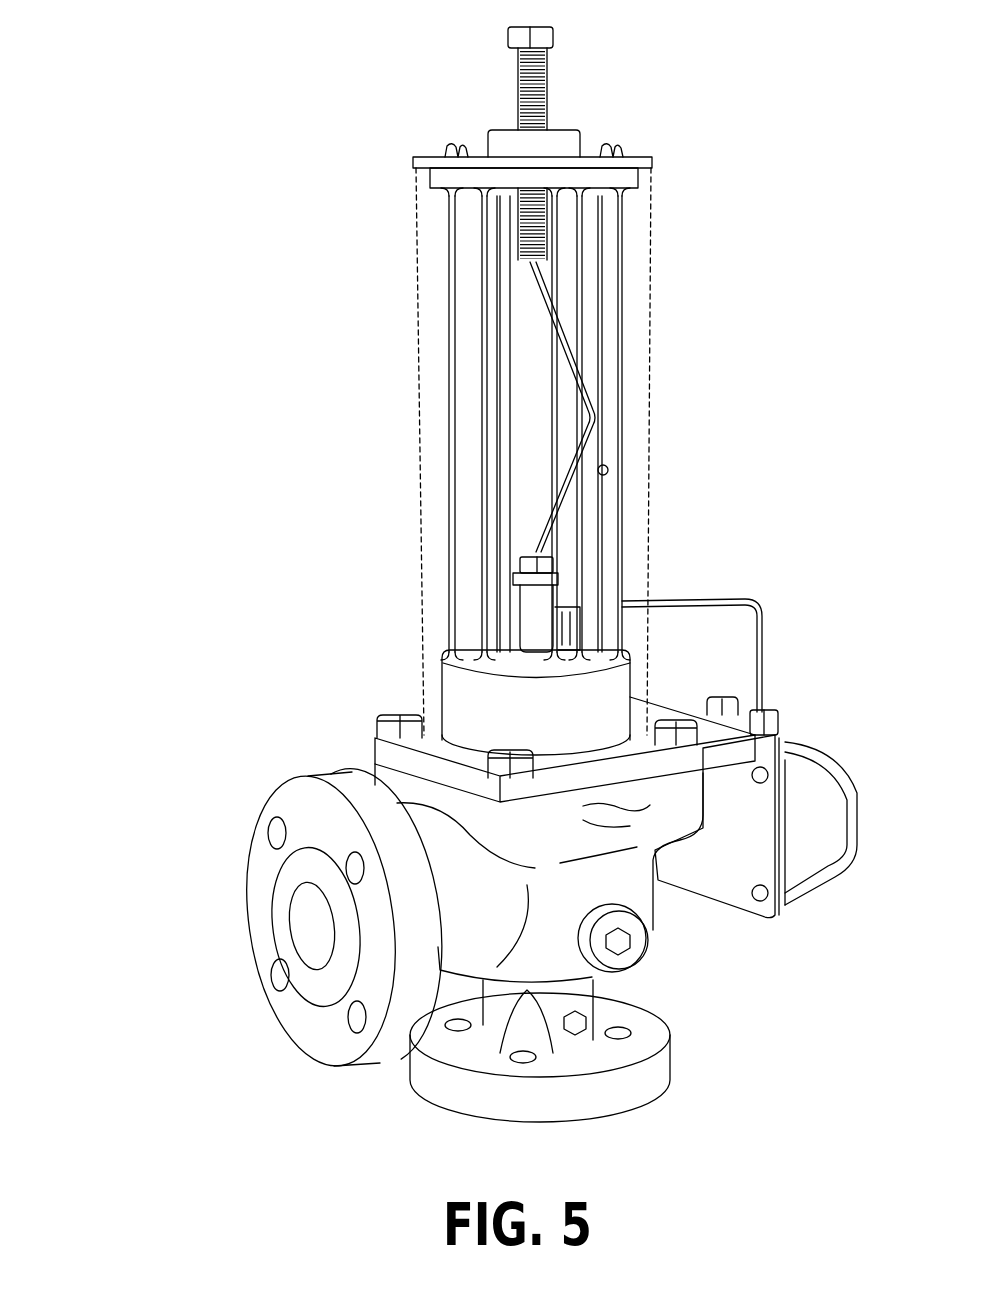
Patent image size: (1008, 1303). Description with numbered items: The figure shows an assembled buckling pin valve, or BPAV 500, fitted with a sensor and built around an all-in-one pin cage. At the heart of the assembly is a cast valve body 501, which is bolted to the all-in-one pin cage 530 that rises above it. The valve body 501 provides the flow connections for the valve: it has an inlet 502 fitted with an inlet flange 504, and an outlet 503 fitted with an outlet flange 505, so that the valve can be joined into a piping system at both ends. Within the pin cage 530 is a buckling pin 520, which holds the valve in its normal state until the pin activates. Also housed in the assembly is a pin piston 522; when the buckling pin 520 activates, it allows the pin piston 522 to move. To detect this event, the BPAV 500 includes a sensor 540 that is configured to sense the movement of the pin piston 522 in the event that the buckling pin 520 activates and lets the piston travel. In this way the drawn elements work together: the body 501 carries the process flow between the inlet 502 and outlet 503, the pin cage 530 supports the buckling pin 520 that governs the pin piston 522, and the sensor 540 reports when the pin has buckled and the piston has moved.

The BPAV 500 is at (300, 277).
The valve body 501 is at (575, 878).
The inlet 502 is at (600, 993).
The outlet 503 is at (294, 902).
The inlet flange 504 is at (593, 1101).
The outlet flange 505 is at (295, 813).
The buckling pin 520 is at (567, 353).
The pin piston 522 is at (524, 621).
The all-in-one pin cage 530 is at (600, 121).
The sensor 540 is at (810, 753).